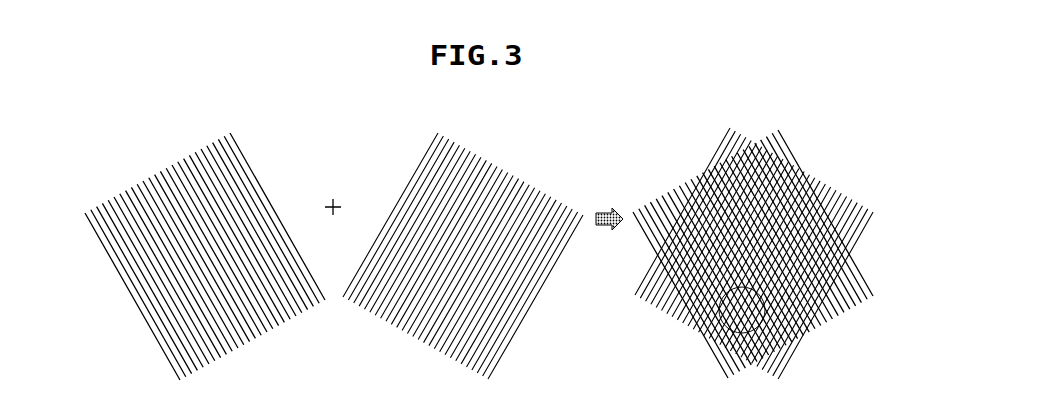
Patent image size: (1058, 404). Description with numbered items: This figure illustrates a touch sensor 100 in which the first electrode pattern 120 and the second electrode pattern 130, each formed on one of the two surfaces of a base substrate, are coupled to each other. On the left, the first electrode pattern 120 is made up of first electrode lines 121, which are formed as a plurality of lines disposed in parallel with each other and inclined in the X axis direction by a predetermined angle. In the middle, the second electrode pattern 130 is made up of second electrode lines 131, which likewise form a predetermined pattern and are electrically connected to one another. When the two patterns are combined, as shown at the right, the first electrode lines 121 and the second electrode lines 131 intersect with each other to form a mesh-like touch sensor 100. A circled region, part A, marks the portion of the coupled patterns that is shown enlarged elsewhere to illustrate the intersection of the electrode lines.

The touch sensor 100 is at (640, 144).
The first electrode pattern 120 is at (117, 144).
The first electrode lines 121 is at (267, 188).
The second electrode pattern 130 is at (373, 140).
The second electrode lines 131 is at (398, 199).
The part A is at (722, 333).